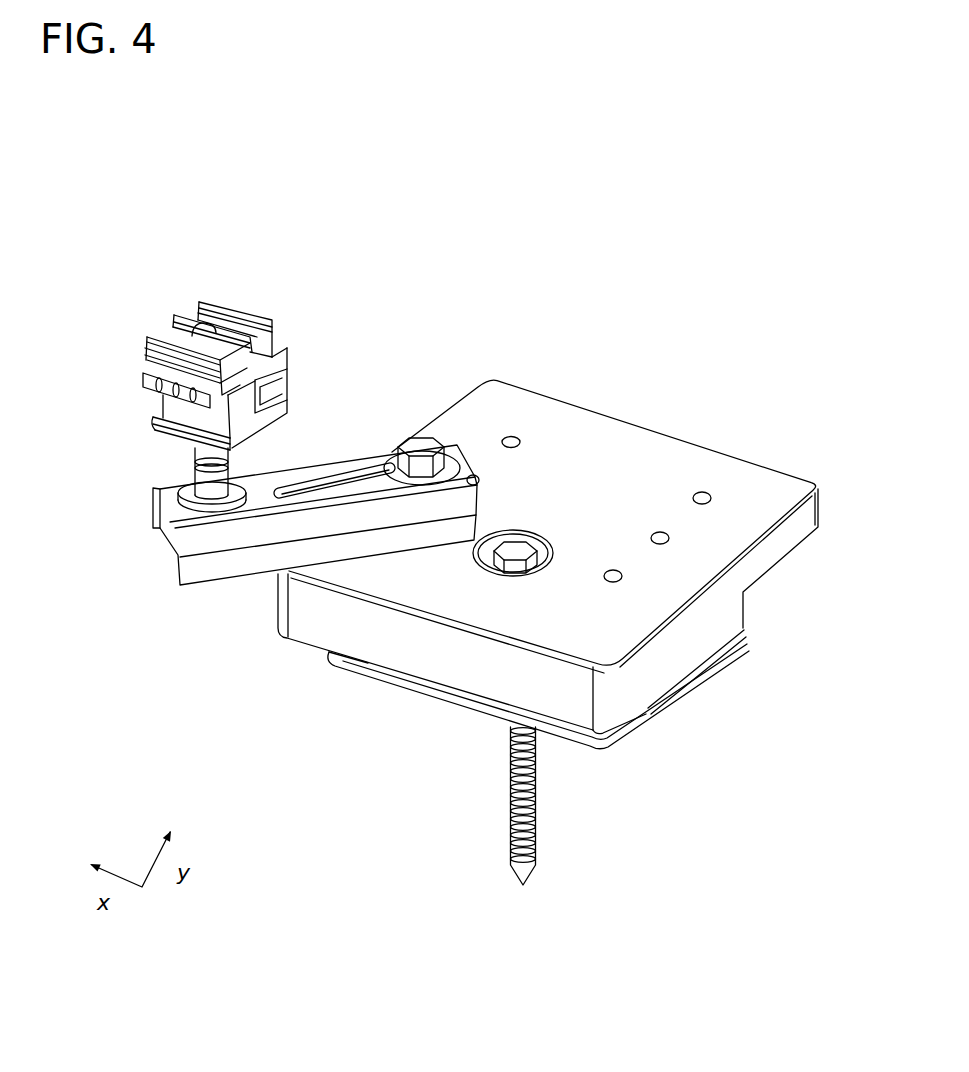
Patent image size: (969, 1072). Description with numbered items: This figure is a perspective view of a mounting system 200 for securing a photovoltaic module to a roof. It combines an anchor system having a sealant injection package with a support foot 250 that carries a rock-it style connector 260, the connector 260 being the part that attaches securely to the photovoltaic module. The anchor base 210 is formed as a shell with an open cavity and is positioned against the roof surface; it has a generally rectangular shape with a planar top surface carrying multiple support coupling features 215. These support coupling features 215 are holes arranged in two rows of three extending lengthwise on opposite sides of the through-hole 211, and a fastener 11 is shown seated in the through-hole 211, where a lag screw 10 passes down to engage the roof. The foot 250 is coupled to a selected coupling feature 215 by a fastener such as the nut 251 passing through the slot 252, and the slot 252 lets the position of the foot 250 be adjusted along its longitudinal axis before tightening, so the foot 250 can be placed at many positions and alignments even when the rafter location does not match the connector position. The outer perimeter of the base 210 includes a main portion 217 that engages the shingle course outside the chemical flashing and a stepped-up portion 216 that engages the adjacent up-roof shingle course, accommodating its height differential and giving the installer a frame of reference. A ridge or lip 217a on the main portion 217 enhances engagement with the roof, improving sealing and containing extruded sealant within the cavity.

The mounting system 200 is at (696, 289).
The anchor base 210 is at (660, 447).
The through-hole 211 is at (525, 529).
The fastener head 11 is at (480, 557).
The support coupling features 215 is at (711, 494).
The stepped-up portion 216 is at (783, 578).
The main portion 217 is at (573, 689).
The ridge or lip 217a is at (733, 643).
The support foot 250 is at (313, 508).
The nut 251 is at (418, 445).
The slot 252 is at (331, 478).
The rock-it style connector 260 is at (275, 358).
The screw 10 is at (540, 832).